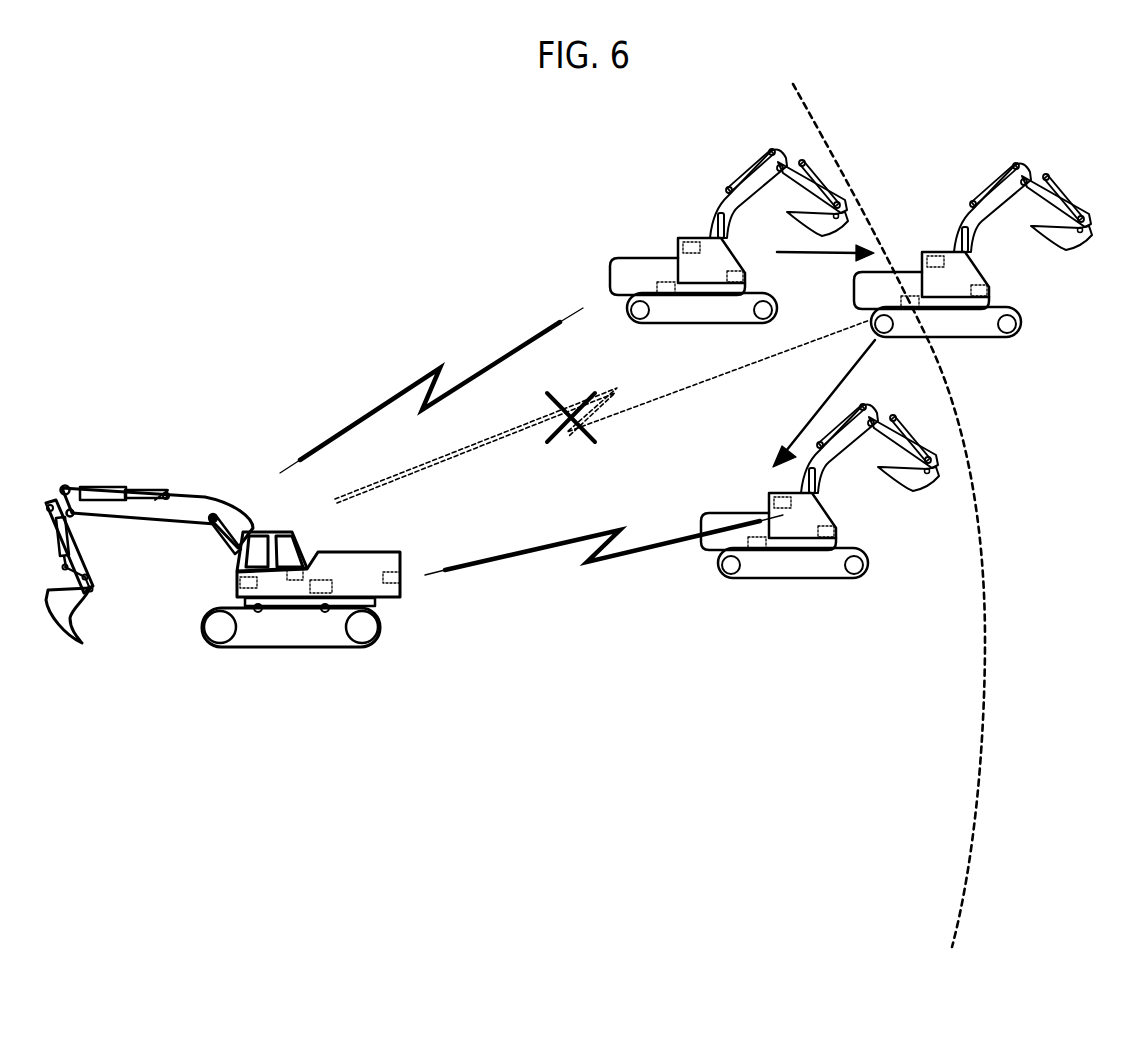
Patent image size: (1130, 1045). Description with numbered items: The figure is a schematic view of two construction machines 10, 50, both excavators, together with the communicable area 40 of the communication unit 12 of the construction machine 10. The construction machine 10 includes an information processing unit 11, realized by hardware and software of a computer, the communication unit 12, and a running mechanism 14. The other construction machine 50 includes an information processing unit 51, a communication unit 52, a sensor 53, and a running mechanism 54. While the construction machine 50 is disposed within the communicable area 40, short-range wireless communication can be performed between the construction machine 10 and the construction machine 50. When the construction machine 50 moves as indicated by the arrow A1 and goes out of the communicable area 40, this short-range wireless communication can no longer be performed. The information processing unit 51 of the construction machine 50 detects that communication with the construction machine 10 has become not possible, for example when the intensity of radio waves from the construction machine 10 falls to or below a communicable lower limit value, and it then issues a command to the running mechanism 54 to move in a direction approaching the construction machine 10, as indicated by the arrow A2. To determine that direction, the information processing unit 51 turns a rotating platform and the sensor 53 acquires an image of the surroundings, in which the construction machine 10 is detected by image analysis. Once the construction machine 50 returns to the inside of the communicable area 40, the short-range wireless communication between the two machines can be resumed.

The construction machine 10 is at (232, 556).
The information processing unit 11 is at (364, 555).
The communication unit 12 is at (323, 546).
The running mechanism 14 is at (303, 644).
The communicable area 40 is at (920, 515).
The construction machine 50 is at (822, 363).
The information processing unit 51 is at (636, 261).
The communication unit 52 is at (687, 245).
The sensor 53 is at (1008, 276).
The running mechanism 54 is at (664, 299).
The arrow A1 is at (825, 268).
The arrow A2 is at (819, 403).